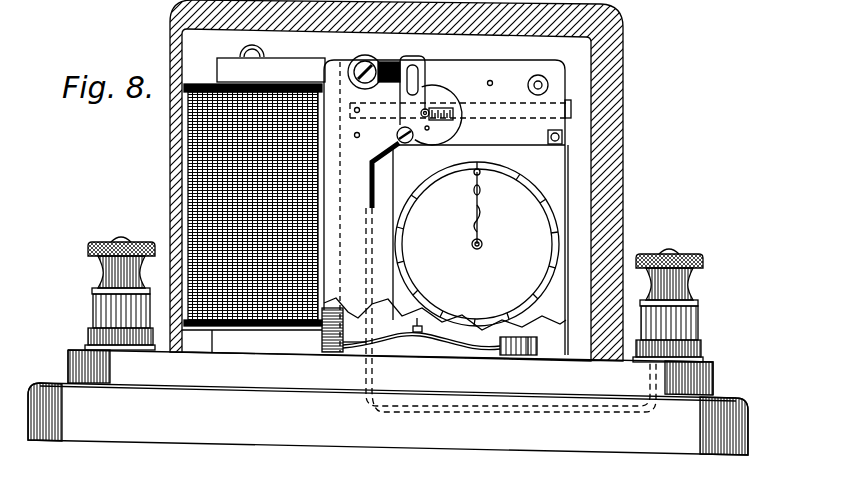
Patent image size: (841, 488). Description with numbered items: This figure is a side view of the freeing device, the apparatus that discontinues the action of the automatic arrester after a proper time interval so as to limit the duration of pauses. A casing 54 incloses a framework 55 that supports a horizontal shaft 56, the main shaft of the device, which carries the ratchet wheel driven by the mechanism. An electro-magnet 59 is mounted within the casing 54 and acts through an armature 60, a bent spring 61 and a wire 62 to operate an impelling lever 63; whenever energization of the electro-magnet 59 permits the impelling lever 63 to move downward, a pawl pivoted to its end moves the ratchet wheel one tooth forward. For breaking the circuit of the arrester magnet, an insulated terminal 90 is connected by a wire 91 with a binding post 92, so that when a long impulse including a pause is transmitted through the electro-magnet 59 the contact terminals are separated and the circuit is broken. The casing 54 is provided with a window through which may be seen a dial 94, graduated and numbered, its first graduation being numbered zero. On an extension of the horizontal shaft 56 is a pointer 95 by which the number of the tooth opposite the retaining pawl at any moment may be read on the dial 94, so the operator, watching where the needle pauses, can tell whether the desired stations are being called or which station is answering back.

The casing 54 is at (612, 74).
The framework 55 is at (447, 207).
The horizontal shaft 56 is at (483, 241).
The electro-magnet 59 is at (198, 165).
The armature 60 is at (330, 348).
The bent spring 61 is at (447, 340).
The wire 62 is at (430, 128).
The impelling lever 63 is at (428, 108).
The insulated terminal 90 is at (406, 98).
The wire 91 is at (366, 172).
The binding post 92 is at (700, 322).
The dial 94 is at (546, 205).
The pointer 95 is at (473, 210).